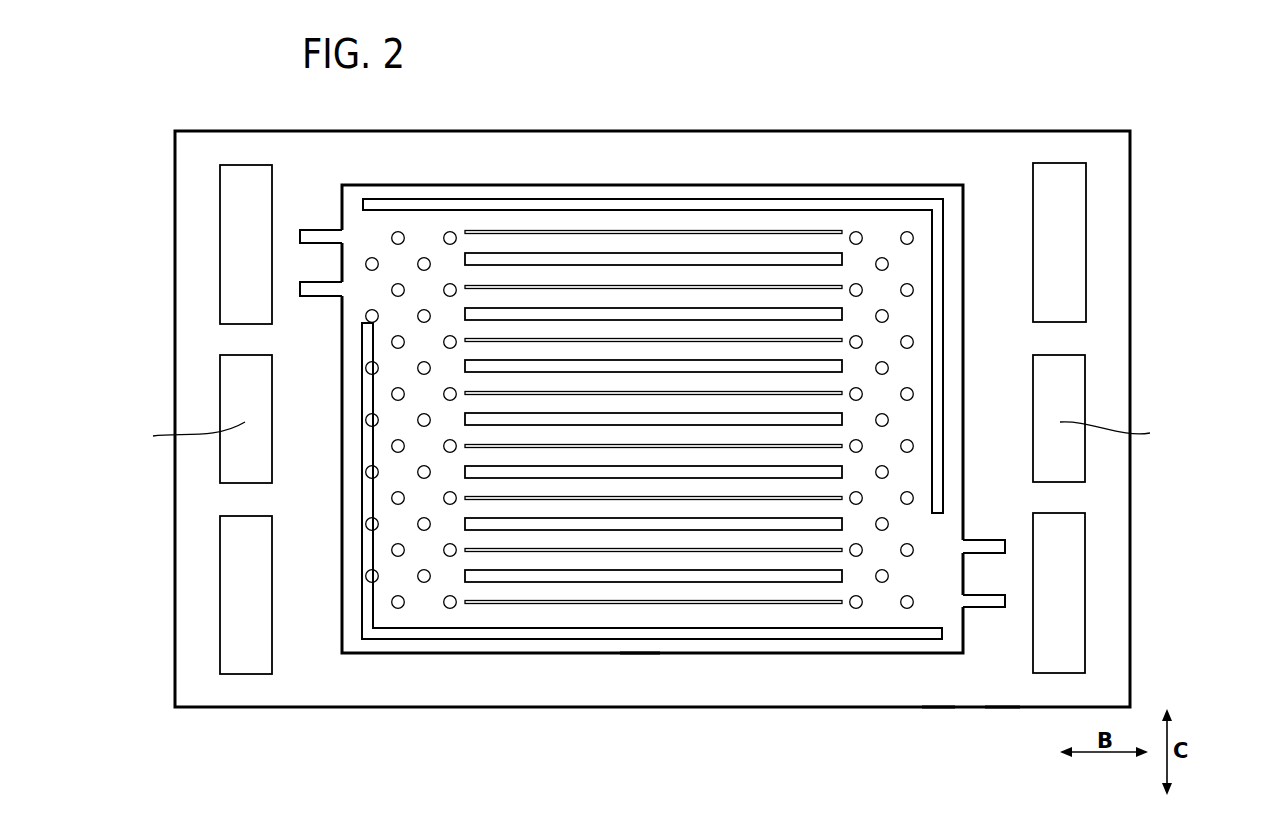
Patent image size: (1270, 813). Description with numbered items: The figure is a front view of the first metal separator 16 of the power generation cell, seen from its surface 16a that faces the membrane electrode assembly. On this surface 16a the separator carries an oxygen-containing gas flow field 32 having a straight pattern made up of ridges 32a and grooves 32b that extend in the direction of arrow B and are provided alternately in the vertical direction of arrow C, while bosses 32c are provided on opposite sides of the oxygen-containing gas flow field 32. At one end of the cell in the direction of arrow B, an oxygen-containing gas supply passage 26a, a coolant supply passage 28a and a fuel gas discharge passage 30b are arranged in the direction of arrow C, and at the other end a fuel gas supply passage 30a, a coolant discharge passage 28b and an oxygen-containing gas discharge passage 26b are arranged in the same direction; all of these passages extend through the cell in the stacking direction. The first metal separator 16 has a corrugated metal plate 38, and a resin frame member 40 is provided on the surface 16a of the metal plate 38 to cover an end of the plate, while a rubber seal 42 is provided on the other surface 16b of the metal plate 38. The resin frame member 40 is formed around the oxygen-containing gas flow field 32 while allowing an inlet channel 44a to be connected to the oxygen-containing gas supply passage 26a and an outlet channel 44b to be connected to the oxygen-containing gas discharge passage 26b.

The first metal separator 16 is at (933, 76).
The surface 16a is at (1002, 688).
The other surface 16b is at (938, 690).
The oxygen-containing gas supply passage 26a is at (246, 244).
The oxygen-containing gas discharge passage 26b is at (1059, 593).
The coolant supply passage 28a is at (160, 419).
The coolant discharge passage 28b is at (1147, 418).
The fuel gas supply passage 30a is at (1059, 242).
The fuel gas discharge passage 30b is at (246, 595).
The oxygen-containing gas flow field 32 is at (651, 380).
The ridges 32a is at (545, 258).
The grooves 32b is at (658, 287).
The bosses 32c is at (418, 420).
The corrugated metal plate 38 is at (788, 622).
The resin frame member 40 is at (558, 678).
The rubber seal 42 is at (639, 678).
The inlet channel 44a is at (318, 230).
The outlet channel 44b is at (985, 607).